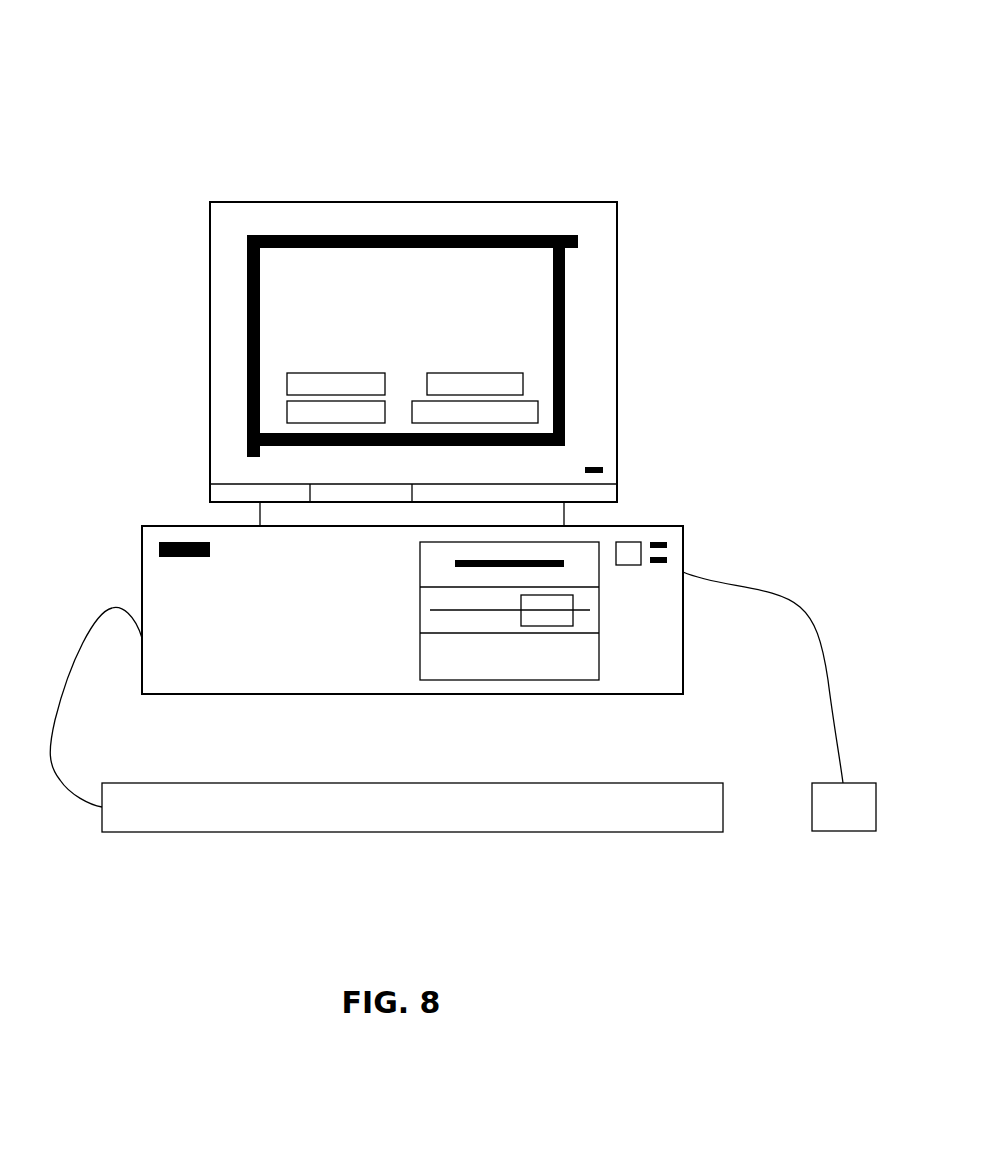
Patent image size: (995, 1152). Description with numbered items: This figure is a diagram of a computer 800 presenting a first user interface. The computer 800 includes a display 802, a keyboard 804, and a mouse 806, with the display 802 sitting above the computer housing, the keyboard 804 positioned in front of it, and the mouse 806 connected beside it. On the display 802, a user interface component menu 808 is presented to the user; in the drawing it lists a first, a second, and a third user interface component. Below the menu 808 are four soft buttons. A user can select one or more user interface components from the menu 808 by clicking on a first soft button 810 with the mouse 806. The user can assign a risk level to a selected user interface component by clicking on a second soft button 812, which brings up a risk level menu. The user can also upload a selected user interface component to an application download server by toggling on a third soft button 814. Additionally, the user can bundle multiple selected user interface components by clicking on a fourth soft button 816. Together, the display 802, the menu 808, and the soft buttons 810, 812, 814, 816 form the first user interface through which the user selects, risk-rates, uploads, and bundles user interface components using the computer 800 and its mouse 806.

The computer 800 is at (210, 106).
The display 802 is at (507, 258).
The keyboard 804 is at (413, 832).
The mouse 806 is at (843, 831).
The user interface component menu 808 is at (503, 343).
The first soft button 810 is at (287, 415).
The second soft button 812 is at (538, 412).
The third soft button 814 is at (287, 385).
The fourth soft button 816 is at (525, 383).